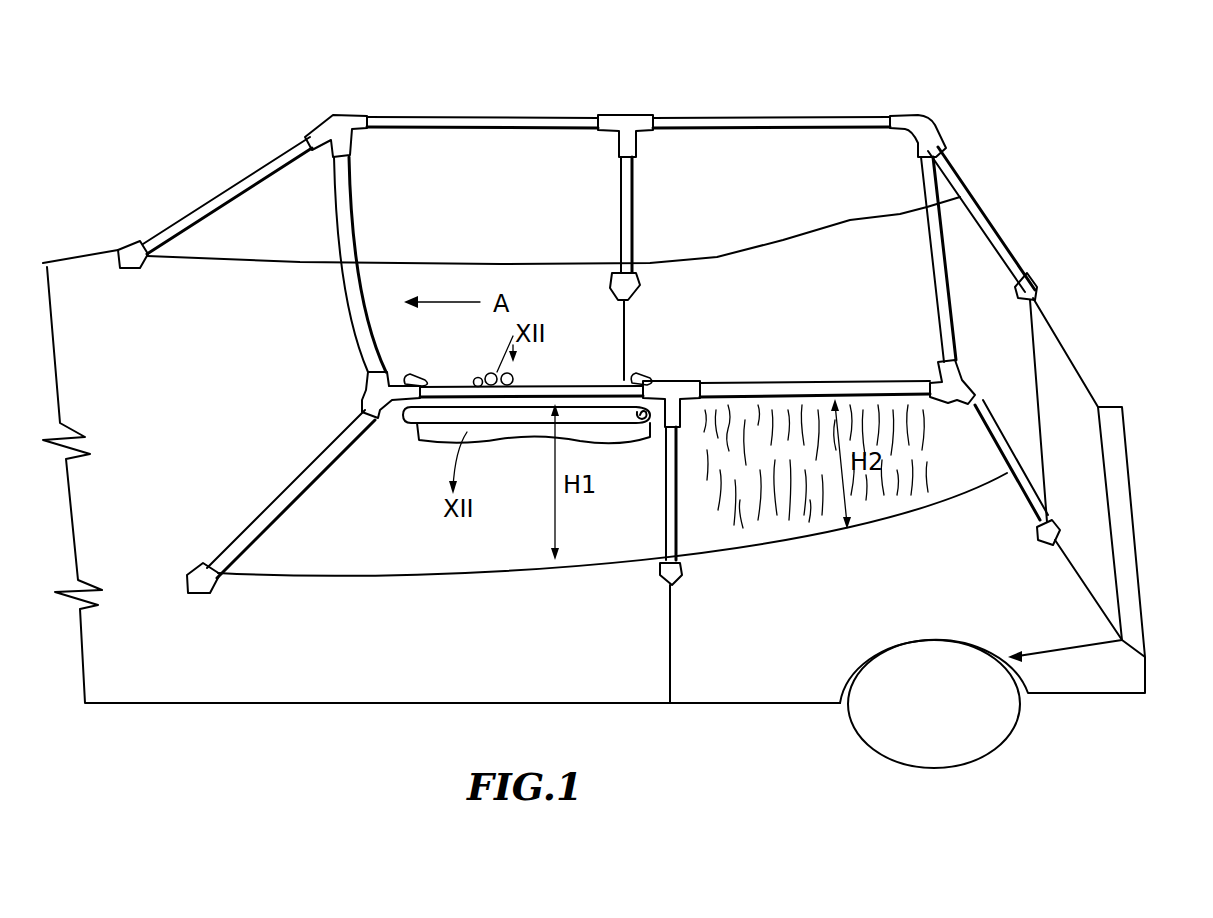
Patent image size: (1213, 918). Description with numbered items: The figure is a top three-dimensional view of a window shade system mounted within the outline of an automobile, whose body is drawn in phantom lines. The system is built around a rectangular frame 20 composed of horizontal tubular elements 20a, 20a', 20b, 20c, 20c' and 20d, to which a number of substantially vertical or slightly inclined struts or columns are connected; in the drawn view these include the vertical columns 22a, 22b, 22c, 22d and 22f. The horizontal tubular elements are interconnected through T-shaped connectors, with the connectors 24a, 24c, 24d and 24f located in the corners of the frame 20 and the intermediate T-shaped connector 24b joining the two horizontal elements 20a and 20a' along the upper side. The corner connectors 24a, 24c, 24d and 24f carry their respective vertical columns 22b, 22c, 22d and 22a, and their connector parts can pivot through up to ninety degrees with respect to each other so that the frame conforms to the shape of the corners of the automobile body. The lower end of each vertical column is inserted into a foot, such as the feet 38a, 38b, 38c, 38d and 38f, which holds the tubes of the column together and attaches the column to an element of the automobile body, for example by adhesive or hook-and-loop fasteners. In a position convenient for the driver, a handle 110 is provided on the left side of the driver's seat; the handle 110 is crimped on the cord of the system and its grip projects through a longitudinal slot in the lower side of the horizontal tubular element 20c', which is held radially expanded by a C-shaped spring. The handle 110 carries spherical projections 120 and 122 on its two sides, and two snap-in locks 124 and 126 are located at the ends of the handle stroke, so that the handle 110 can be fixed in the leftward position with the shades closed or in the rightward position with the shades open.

The rectangular frame 20 is at (677, 114).
The horizontal tubular element 20a is at (482, 93).
The horizontal tubular element 20a' is at (771, 94).
The horizontal tubular element 20b is at (933, 180).
The horizontal tubular element 20c is at (815, 454).
The horizontal tubular element 20c' is at (531, 361).
The horizontal tubular element 20d is at (337, 192).
The vertical column 22a is at (293, 477).
The vertical column 22b is at (228, 192).
The vertical column 22c is at (632, 214).
The vertical column 22d is at (1000, 400).
The vertical column 22f is at (676, 475).
The T-shaped connector 24a is at (352, 116).
The intermediate T-shaped connector 24b is at (620, 116).
The T-shaped connector 24c is at (917, 116).
The T-shaped connector 24d is at (940, 376).
The T-shaped connector 24f is at (386, 398).
The foot 38a is at (200, 576).
The foot 38b is at (133, 246).
The foot 38c is at (626, 284).
The foot 38d is at (1060, 530).
The foot 38f is at (673, 574).
The handle 110 is at (489, 385).
The spherical projection 120 is at (476, 378).
The spherical projection 122 is at (512, 385).
The snap-in lock 124 is at (404, 380).
The snap-in lock 126 is at (637, 375).